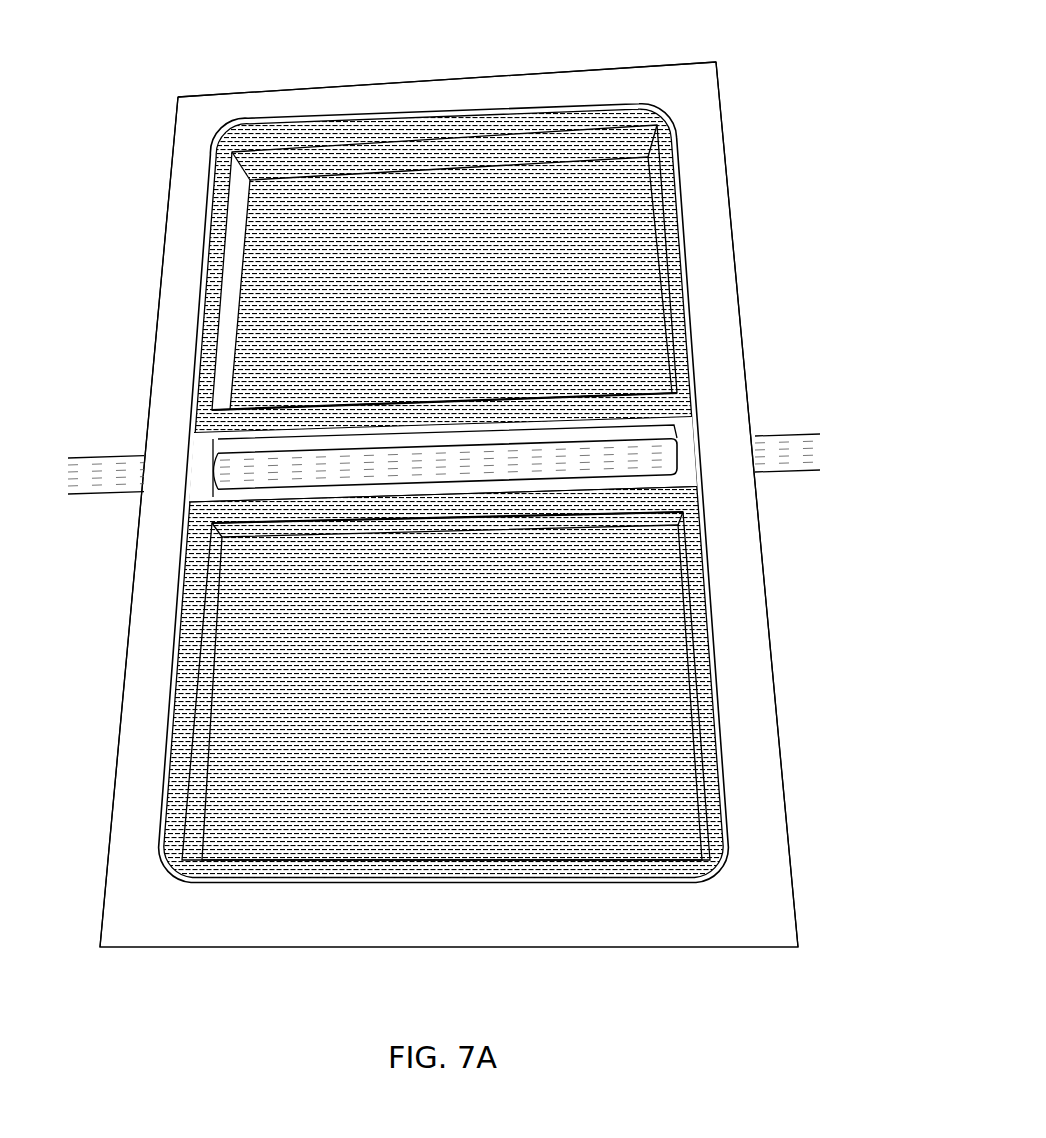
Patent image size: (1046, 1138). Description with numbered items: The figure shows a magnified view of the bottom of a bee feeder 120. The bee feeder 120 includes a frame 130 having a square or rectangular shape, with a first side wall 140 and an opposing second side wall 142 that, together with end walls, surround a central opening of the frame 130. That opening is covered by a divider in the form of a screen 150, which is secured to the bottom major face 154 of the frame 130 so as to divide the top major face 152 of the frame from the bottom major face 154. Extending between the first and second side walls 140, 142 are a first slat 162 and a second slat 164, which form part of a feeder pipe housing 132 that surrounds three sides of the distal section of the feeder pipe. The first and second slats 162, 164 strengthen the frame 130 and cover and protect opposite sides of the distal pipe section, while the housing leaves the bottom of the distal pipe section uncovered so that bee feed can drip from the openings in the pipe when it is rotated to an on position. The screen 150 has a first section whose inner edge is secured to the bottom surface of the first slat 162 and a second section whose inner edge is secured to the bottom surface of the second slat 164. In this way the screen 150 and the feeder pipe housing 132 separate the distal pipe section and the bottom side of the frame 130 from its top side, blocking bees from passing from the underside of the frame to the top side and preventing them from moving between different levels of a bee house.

The bee feeder 120 is at (253, 100).
The frame 130 is at (368, 95).
The feeder pipe housing 132 is at (724, 440).
The first side wall 140 is at (740, 697).
The second side wall 142 is at (160, 636).
The screen 150 is at (598, 830).
The top major face 152 is at (282, 470).
The bottom major face 154 is at (540, 83).
The first slat 162 is at (273, 495).
The second slat 164 is at (273, 442).